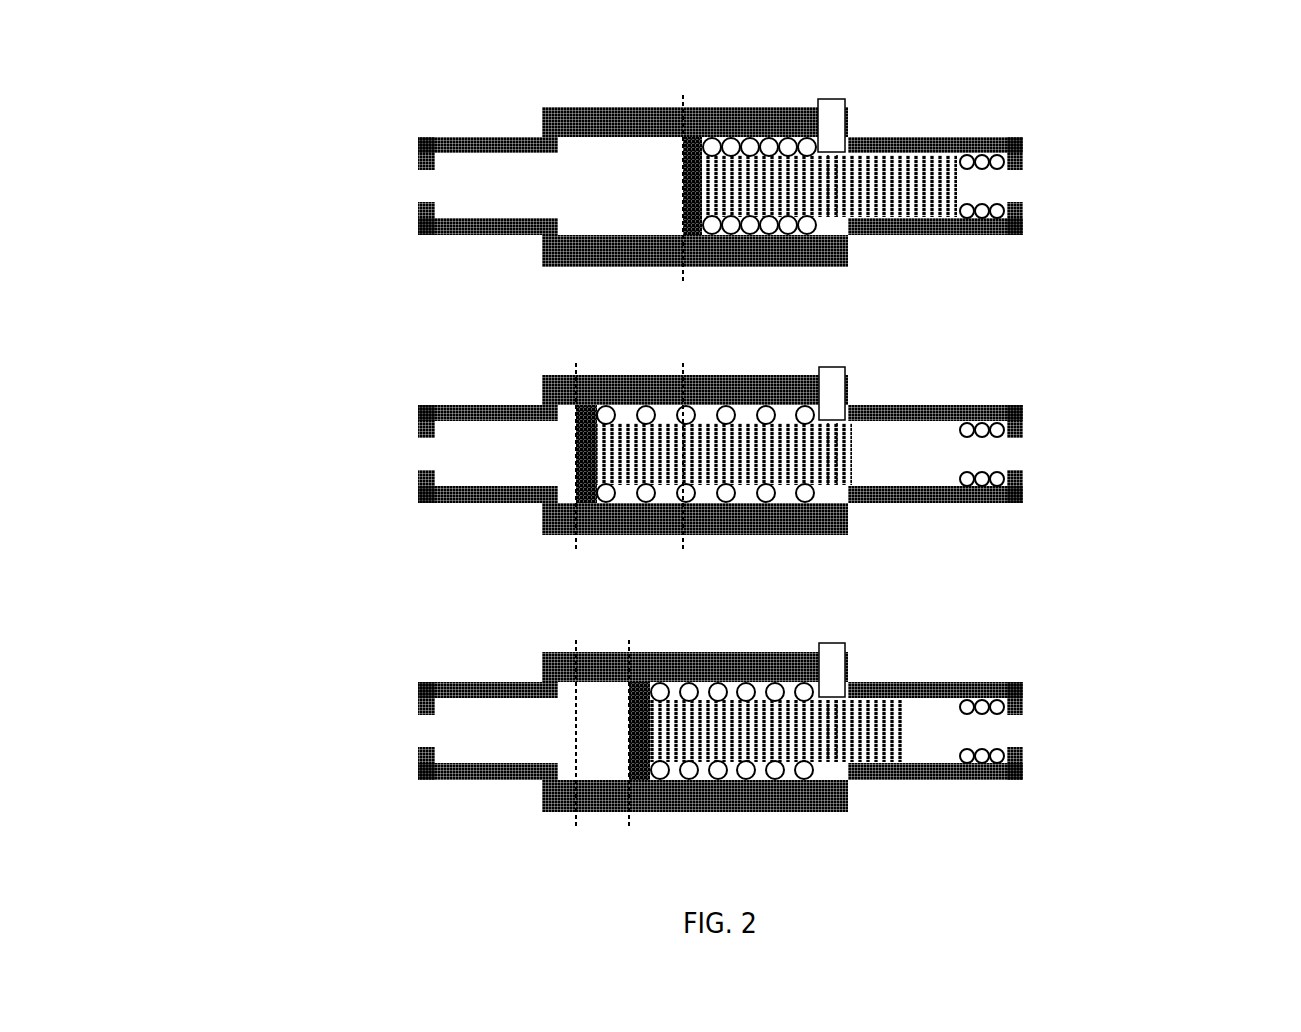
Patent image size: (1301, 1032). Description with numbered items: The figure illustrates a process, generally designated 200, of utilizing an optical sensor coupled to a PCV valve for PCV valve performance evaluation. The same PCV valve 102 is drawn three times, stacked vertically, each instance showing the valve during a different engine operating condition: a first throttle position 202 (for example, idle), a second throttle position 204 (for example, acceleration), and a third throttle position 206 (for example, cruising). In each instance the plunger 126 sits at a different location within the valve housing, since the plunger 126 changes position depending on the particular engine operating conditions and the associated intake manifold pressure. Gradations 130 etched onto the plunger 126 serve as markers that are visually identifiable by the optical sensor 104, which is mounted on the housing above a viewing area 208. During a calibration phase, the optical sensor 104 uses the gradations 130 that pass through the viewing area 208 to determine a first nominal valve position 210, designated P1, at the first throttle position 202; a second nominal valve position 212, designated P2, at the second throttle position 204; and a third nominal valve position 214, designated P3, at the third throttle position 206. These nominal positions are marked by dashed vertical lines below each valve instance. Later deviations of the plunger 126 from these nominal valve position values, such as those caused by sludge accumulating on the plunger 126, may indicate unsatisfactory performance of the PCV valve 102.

The PCV valve 102 is at (439, 95).
The optical sensor 104 is at (841, 104).
The plunger 126 is at (692, 153).
The gradations 130 is at (775, 207).
The process of utilizing an optical sensor coupled to a PCV valve for PCV valve perf 200 is at (1185, 71).
The first throttle position 202 is at (589, 141).
The second throttle position 204 is at (589, 455).
The third throttle position 206 is at (589, 732).
The viewing area 208 is at (839, 223).
The first nominal valve position 210 is at (682, 350).
The second nominal valve position 212 is at (576, 622).
The third nominal valve position 214 is at (630, 761).